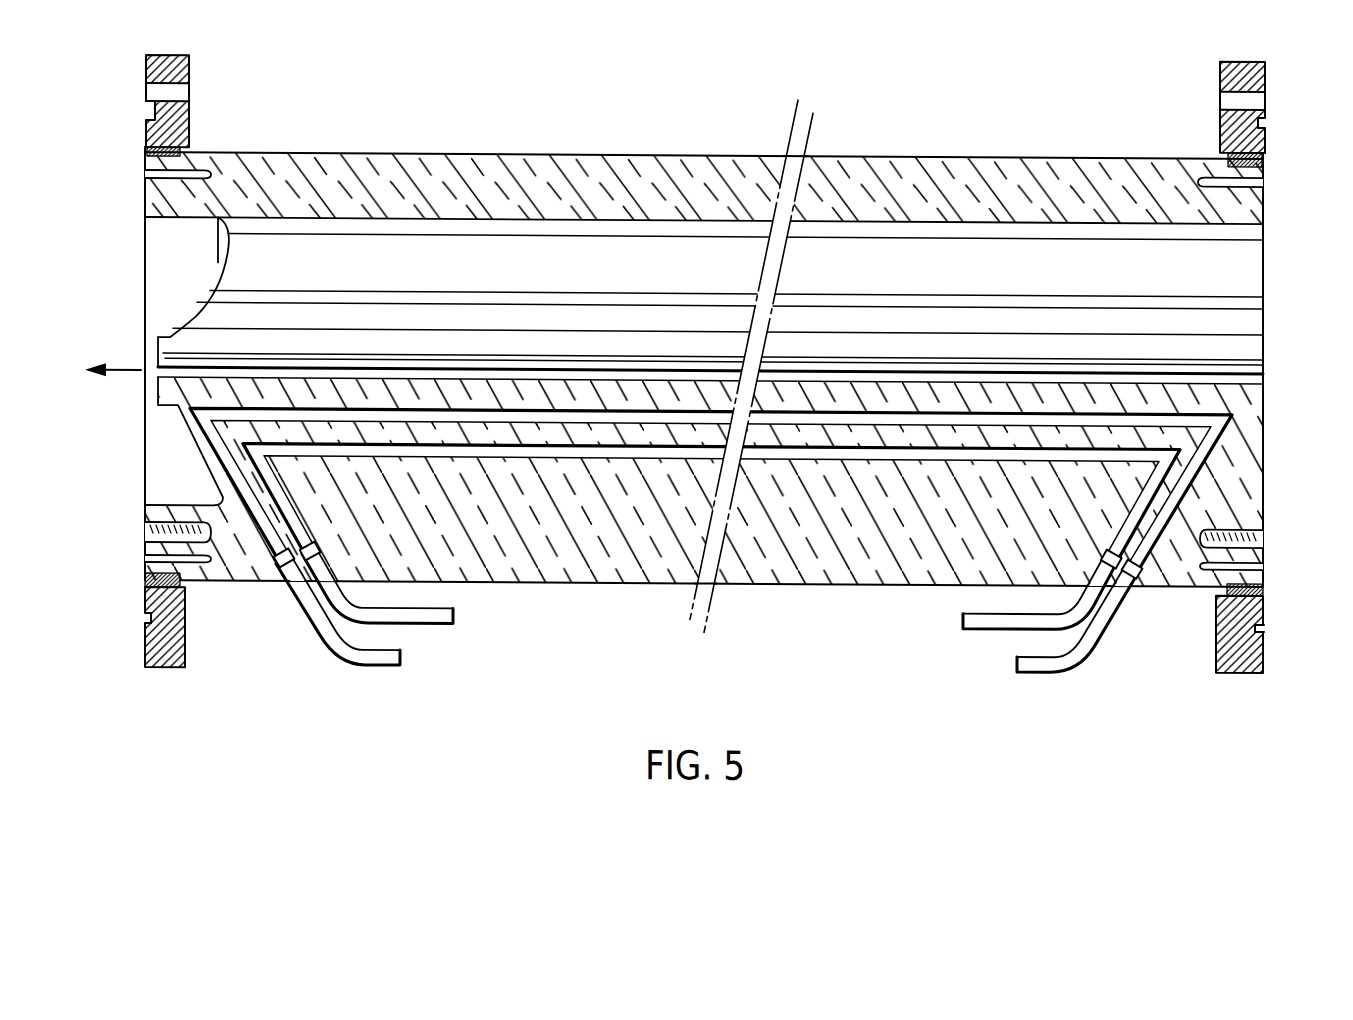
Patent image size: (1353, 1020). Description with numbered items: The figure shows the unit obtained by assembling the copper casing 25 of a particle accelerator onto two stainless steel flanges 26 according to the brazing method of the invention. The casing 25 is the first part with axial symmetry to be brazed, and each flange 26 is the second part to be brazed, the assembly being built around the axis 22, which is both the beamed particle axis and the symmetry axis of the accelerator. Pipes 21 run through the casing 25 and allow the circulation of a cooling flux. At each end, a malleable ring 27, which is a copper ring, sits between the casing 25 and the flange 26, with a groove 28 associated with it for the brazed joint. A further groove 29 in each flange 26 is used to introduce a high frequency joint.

The pipes 21 is at (400, 658).
The axis 22 is at (118, 372).
The casing 25 is at (565, 177).
The flange 26 is at (170, 642).
The malleable ring 27 is at (148, 152).
The groove 28 is at (145, 173).
The groove 29 is at (148, 617).